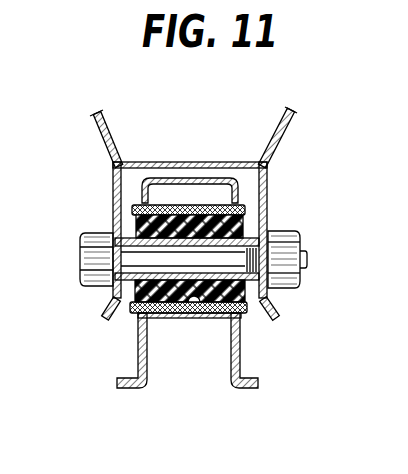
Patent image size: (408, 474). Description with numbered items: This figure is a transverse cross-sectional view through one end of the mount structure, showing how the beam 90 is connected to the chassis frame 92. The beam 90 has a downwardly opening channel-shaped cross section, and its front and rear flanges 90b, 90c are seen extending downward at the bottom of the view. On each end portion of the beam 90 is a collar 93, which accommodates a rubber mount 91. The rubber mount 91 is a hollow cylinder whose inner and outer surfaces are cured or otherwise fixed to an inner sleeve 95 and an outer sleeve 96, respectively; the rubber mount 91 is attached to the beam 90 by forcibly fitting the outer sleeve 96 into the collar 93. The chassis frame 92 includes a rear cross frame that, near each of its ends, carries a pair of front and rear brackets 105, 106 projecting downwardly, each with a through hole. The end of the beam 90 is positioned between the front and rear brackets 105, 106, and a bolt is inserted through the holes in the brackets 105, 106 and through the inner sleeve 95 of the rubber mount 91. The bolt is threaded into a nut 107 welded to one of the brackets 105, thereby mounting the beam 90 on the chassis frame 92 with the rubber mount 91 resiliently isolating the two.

The beam 90 is at (197, 368).
The front flange 90b is at (238, 345).
The rear flange 90c is at (140, 345).
The rubber mount 91 is at (118, 294).
The chassis frame 92 is at (191, 200).
The collar 93 is at (205, 213).
The inner sleeve 95 is at (243, 243).
The outer sleeve 96 is at (192, 302).
The front bracket 105 is at (268, 219).
The rear bracket 106 is at (113, 216).
The nut 107 is at (288, 283).